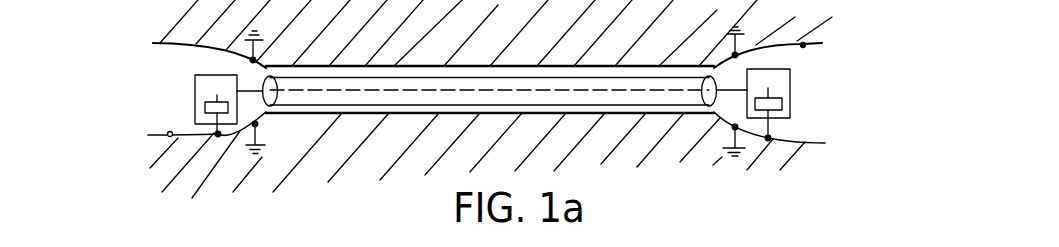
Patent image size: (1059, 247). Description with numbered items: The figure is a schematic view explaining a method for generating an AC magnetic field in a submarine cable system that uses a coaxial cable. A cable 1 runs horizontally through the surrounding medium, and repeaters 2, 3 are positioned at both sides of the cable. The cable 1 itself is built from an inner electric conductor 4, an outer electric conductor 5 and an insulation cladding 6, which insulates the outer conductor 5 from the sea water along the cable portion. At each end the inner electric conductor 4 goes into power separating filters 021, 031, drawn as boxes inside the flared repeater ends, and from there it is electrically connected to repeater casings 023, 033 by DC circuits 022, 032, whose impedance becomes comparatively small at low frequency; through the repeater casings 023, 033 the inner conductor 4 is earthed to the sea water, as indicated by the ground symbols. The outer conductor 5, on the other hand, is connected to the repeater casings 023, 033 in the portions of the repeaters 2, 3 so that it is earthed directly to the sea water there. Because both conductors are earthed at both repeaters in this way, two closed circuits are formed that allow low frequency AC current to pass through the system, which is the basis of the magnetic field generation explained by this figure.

The cable 1 is at (503, 65).
The repeater 2 is at (197, 40).
The repeater 3 is at (797, 40).
The inner electric conductor 4 is at (407, 81).
The outer electric conductor 5 is at (553, 105).
The insulation cladding 6 is at (584, 67).
The power separating filter 021 is at (195, 84).
The DC circuit 022 is at (197, 114).
The repeater casing 023 is at (167, 137).
The power separating filter 031 is at (790, 69).
The DC circuit 032 is at (782, 105).
The repeater casing 033 is at (806, 43).